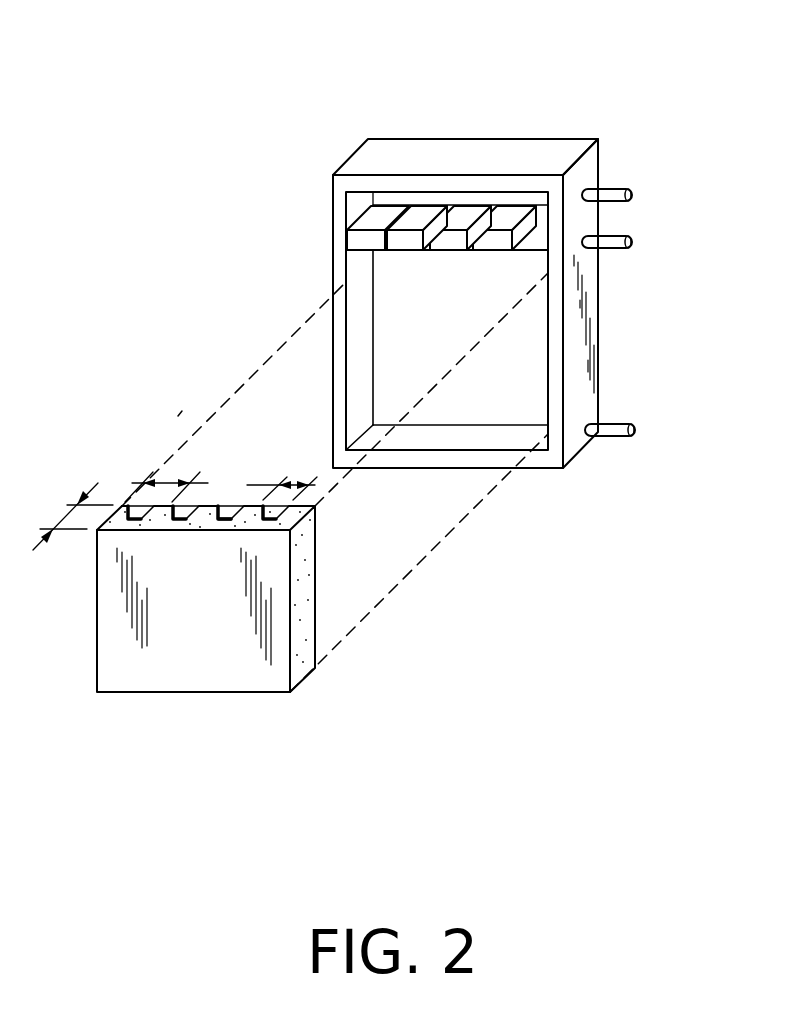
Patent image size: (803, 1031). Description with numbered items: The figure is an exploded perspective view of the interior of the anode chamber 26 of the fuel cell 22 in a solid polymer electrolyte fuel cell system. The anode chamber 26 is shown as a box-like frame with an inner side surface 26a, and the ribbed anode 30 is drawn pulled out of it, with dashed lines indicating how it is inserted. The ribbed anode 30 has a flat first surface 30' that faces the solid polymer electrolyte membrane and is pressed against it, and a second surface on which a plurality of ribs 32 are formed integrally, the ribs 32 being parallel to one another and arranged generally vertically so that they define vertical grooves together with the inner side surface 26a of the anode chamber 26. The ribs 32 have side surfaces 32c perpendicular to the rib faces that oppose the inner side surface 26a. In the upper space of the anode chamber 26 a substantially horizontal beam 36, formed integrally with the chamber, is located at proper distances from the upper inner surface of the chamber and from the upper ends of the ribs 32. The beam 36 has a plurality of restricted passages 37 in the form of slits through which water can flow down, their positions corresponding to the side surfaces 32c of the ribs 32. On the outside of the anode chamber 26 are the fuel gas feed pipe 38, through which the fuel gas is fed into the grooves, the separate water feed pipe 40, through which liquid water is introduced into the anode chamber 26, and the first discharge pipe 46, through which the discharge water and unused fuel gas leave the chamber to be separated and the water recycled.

The fuel cell 22 is at (358, 389).
The anode chamber 26 is at (512, 152).
The inner side surface of the anode chamber 26a is at (495, 400).
The ribbed anode 30 is at (206, 636).
The first surface 30' is at (189, 653).
The ribs 32 is at (218, 508).
The side surfaces of the ribs 32c is at (233, 513).
The beam 36 is at (385, 208).
The restricted passages 37 is at (377, 213).
The fuel gas feed pipe 38 is at (620, 234).
The water feed pipe 40 is at (618, 184).
The first discharge pipe 46 is at (613, 425).